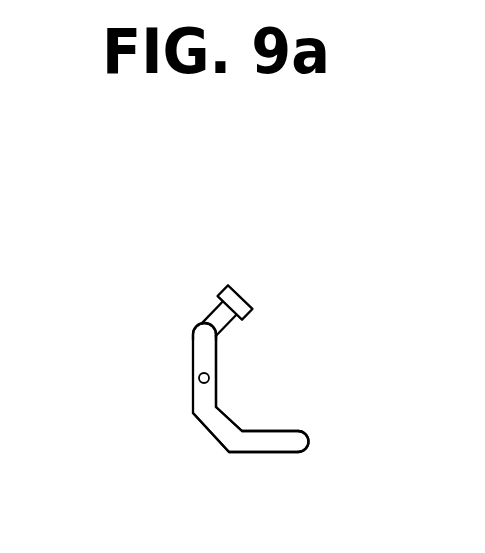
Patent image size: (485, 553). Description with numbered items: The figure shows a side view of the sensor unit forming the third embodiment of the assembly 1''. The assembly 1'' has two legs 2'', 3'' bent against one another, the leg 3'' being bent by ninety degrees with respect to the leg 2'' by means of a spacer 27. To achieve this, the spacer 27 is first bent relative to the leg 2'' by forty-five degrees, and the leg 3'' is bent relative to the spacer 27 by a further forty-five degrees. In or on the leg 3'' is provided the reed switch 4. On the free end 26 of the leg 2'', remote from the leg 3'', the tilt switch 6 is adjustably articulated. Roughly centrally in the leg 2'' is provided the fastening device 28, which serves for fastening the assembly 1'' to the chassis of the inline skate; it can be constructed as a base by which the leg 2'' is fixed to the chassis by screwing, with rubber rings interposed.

The assembly 1'' is at (166, 387).
The leg 2'' is at (289, 327).
The leg 3'' is at (323, 409).
The reed switch 4 is at (280, 445).
The tilt switch 6 is at (236, 293).
The free end 26 is at (203, 340).
The spacer 27 is at (215, 430).
The fastening device 28 is at (212, 375).